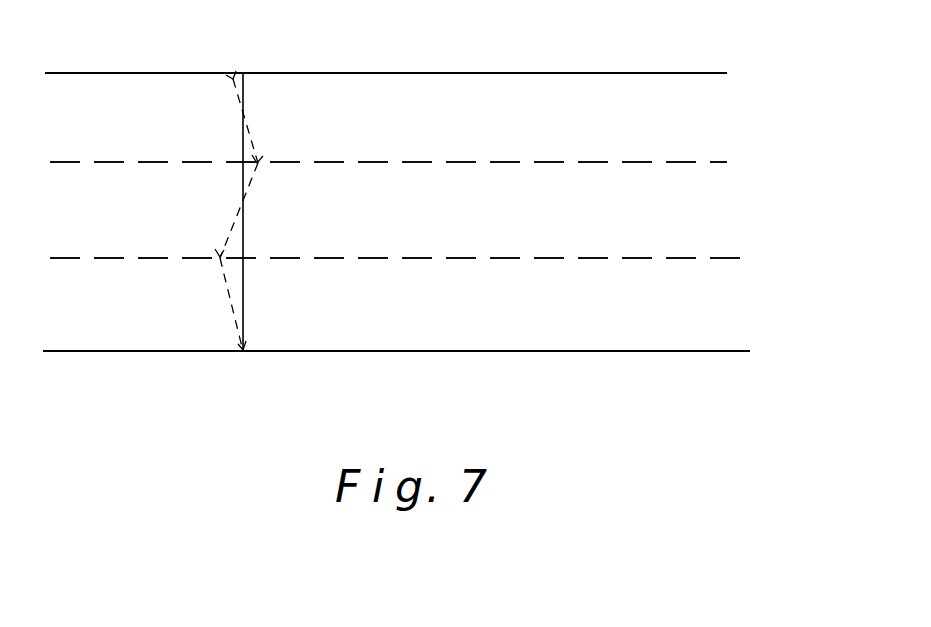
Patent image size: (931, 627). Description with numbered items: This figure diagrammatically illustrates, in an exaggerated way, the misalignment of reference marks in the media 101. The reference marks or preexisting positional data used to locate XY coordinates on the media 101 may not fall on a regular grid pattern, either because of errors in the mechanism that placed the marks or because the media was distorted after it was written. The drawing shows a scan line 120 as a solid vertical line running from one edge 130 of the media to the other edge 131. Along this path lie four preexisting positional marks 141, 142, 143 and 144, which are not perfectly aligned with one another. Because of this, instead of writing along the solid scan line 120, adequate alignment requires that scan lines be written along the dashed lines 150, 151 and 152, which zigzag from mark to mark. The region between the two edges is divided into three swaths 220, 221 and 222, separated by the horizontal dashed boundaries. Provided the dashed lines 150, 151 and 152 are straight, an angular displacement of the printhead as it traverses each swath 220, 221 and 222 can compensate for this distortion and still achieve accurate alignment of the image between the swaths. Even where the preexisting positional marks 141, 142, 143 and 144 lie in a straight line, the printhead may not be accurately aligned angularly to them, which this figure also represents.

The media 101 is at (623, 352).
The scan line 120 is at (244, 97).
The edge 130 is at (614, 73).
The edge 131 is at (517, 352).
The preexisting positional mark 141 is at (233, 79).
The preexisting positional mark 142 is at (257, 163).
The preexisting positional mark 143 is at (220, 257).
The preexisting positional mark 144 is at (243, 350).
The dashed line 150 is at (240, 93).
The dashed line 151 is at (244, 200).
The dashed line 152 is at (230, 313).
The swath 220 is at (653, 300).
The swath 221 is at (646, 212).
The swath 222 is at (653, 118).